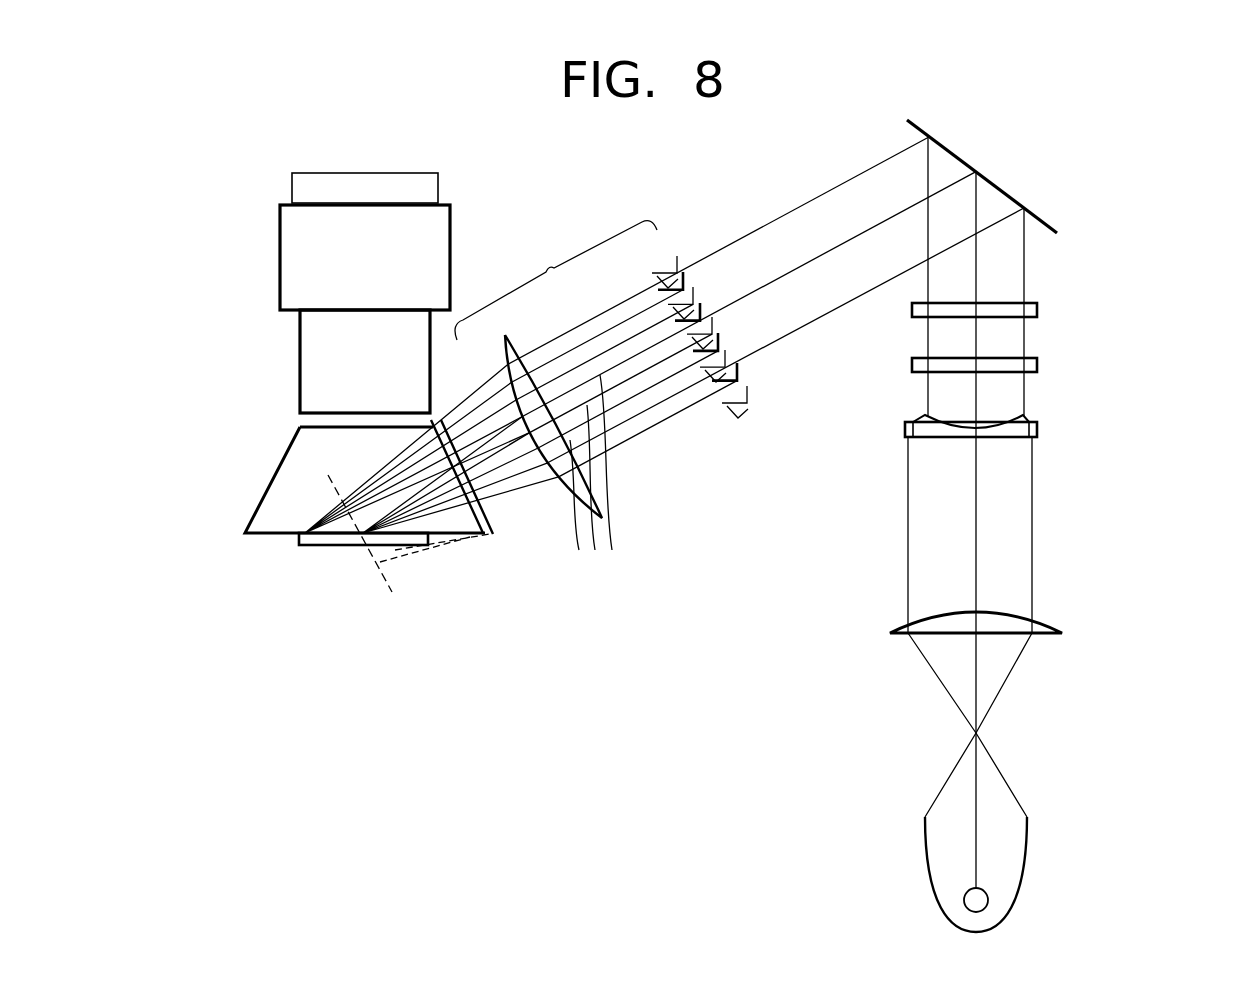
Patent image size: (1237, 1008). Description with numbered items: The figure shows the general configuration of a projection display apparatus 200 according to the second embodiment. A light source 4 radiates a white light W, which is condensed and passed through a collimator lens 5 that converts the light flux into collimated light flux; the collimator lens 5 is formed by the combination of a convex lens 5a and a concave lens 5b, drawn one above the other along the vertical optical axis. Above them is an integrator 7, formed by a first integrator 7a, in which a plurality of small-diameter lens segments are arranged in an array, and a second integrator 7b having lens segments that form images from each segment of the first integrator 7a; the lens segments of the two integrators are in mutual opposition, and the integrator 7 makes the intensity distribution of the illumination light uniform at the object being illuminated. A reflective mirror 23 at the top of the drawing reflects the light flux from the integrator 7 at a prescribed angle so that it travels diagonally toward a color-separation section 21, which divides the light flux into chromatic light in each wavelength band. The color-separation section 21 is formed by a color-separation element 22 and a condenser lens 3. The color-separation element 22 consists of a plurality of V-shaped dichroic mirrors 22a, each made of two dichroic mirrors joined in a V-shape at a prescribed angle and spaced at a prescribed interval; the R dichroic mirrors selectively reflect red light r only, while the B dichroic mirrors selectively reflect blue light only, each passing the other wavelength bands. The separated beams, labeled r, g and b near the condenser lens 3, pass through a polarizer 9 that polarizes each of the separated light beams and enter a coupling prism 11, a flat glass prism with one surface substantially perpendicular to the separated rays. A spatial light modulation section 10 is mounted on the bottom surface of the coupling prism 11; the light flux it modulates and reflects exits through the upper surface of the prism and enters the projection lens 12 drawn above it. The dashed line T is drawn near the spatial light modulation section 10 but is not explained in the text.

The projection display apparatus 200 is at (776, 208).
The projection lens 12 is at (280, 247).
The coupling prism 11 is at (288, 478).
The spatial light modulation section 10 is at (332, 548).
The image plane T is at (395, 585).
The polarizer 9 is at (497, 535).
The condenser lens 3 is at (505, 352).
The color-separation section 21 is at (556, 280).
The color-separation element 22 is at (748, 405).
The V-shaped dichroic mirror 22a is at (725, 368).
The reflective mirror 23 is at (990, 178).
The white light W is at (800, 340).
The integrator 7 is at (960, 355).
The first integrator 7a is at (912, 365).
The second integrator 7b is at (912, 308).
The collimator lens 5 is at (1038, 520).
The convex lens 5a is at (998, 609).
The concave lens 5b is at (1040, 432).
The light source 4 is at (1032, 838).
The red light r is at (579, 507).
The green light g is at (597, 490).
The blue light b is at (612, 475).